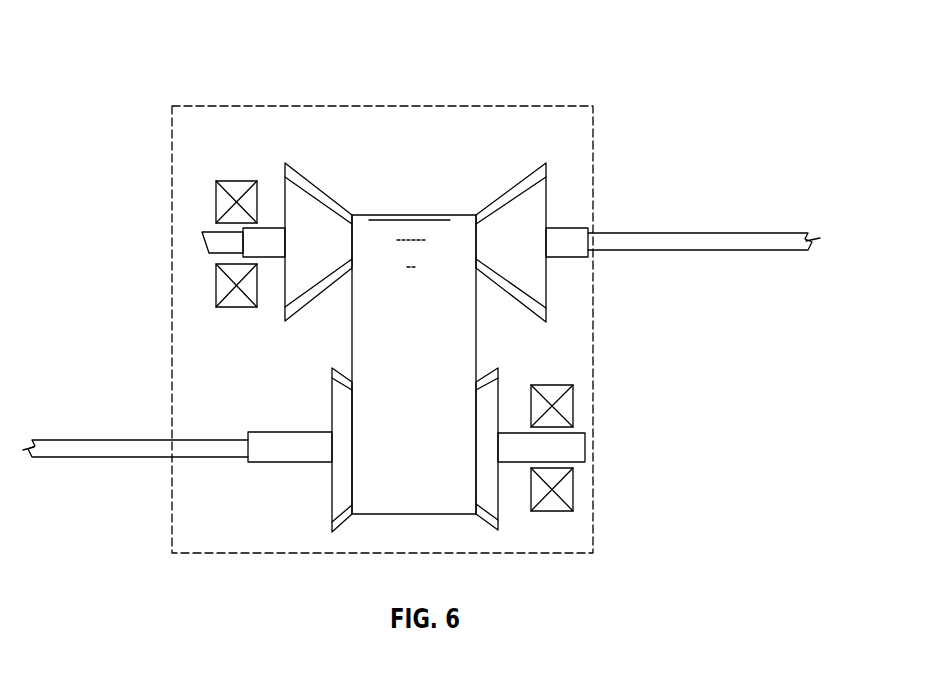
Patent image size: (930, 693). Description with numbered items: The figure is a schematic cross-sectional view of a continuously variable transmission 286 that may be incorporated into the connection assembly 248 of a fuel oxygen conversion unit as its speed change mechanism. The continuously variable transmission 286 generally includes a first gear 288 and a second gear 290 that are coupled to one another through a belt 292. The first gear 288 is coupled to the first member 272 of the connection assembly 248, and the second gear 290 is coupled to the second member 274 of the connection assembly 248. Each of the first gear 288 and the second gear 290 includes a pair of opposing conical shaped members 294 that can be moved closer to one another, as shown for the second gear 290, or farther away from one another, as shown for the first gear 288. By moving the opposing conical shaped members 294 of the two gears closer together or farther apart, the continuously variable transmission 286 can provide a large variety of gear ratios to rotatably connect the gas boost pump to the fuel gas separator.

The connection assembly 248 is at (134, 136).
The continuously variable transmission 286 is at (405, 108).
The first gear 288 is at (512, 120).
The second gear 290 is at (480, 541).
The belt 292 is at (465, 352).
The conical shaped members 294 is at (546, 205).
The first member 272 is at (740, 252).
The second member 274 is at (70, 458).